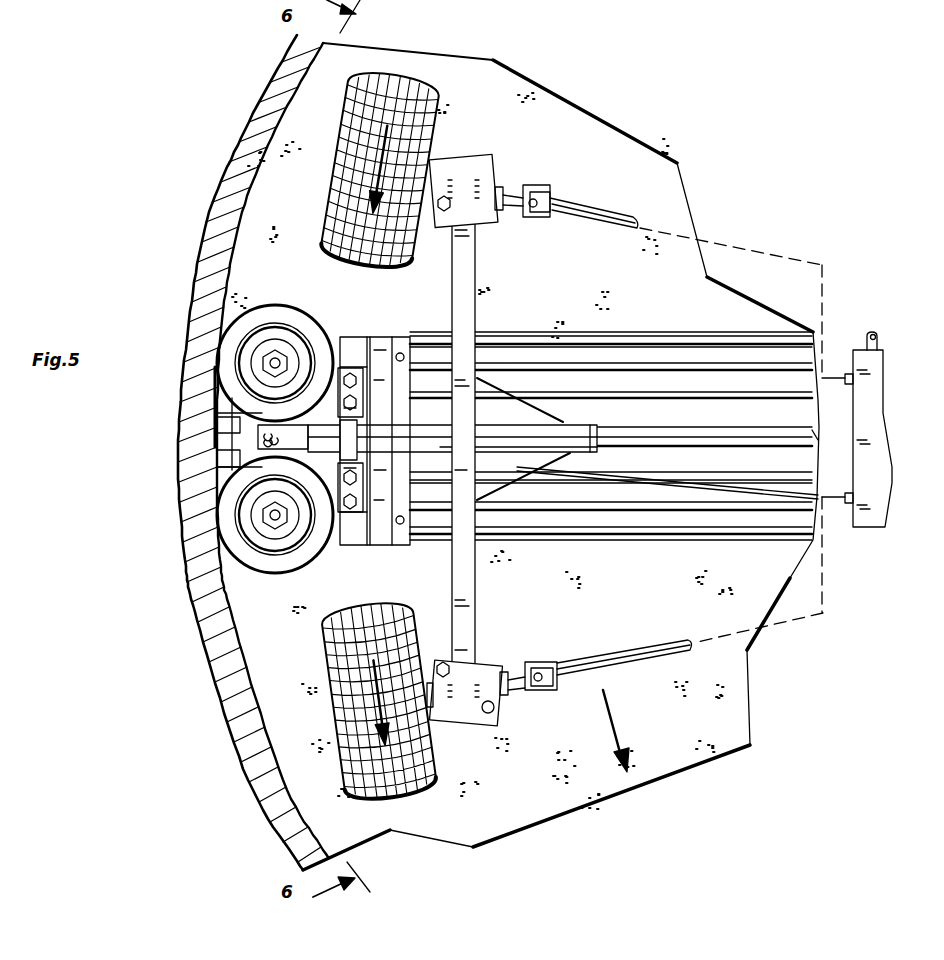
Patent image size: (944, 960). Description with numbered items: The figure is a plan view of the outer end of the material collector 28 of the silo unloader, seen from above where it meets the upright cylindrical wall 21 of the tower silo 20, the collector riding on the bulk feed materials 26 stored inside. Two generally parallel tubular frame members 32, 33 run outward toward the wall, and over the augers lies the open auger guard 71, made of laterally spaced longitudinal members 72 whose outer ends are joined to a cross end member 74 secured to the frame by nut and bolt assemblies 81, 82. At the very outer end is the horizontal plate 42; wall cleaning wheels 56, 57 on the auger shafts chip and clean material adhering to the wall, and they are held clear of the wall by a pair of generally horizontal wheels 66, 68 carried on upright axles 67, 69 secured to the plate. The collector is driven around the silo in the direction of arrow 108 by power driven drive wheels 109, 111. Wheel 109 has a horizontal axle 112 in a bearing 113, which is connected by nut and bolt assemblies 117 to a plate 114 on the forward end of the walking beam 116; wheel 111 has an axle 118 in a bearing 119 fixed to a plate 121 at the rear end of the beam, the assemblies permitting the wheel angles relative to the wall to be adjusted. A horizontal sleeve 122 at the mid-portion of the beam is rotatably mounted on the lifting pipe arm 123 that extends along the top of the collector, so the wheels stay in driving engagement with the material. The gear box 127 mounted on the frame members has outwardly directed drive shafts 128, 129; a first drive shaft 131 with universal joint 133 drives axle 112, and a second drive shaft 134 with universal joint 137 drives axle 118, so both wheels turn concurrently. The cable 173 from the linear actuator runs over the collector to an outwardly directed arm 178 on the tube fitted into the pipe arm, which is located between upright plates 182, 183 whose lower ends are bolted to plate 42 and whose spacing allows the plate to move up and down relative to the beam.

The tower silo 20 is at (146, 262).
The upright cylindrical wall 21 is at (195, 648).
The bulk feed materials 26 is at (740, 686).
The material collector 28 is at (783, 296).
The frame member 32 is at (682, 541).
The frame member 33 is at (527, 336).
The horizontal plate 42 is at (356, 337).
The wall cleaning wheel 56 is at (215, 458).
The wall cleaning wheel 57 is at (215, 425).
The horizontal wheel 66 is at (218, 545).
The upright axle 67 is at (278, 532).
The horizontal wheel 68 is at (230, 342).
The upright axle 69 is at (276, 345).
The auger guard 71 is at (603, 350).
The longitudinal members 72 is at (690, 392).
The cross end member 74 is at (399, 332).
The nut and bolt assembly 81 is at (404, 355).
The nut and bolt assembly 82 is at (400, 525).
The arrow 108 is at (630, 733).
The drive wheel 109 is at (420, 790).
The drive wheel 111 is at (438, 92).
The rotating axle 112 is at (512, 670).
The bearing 113 is at (508, 692).
The plate 114 is at (457, 718).
The walking beam 116 is at (474, 603).
The nut and bolt assemblies 117 is at (487, 715).
The rotating axle 118 is at (506, 212).
The bearing 119 is at (440, 158).
The plate 121 is at (500, 190).
The horizontal sleeve 122 is at (485, 165).
The lifting pipe arm 123 is at (808, 432).
The gear box 127 is at (860, 346).
The drive shaft 128 is at (845, 505).
The drive shaft 129 is at (842, 395).
The first drive shaft 131 is at (652, 642).
The universal joint 133 is at (548, 660).
The second drive shaft 134 is at (600, 216).
The universal joint 137 is at (553, 195).
The cable 173 is at (700, 485).
The arm 178 is at (293, 432).
The upright plate 182 is at (347, 335).
The upright plate 183 is at (350, 510).